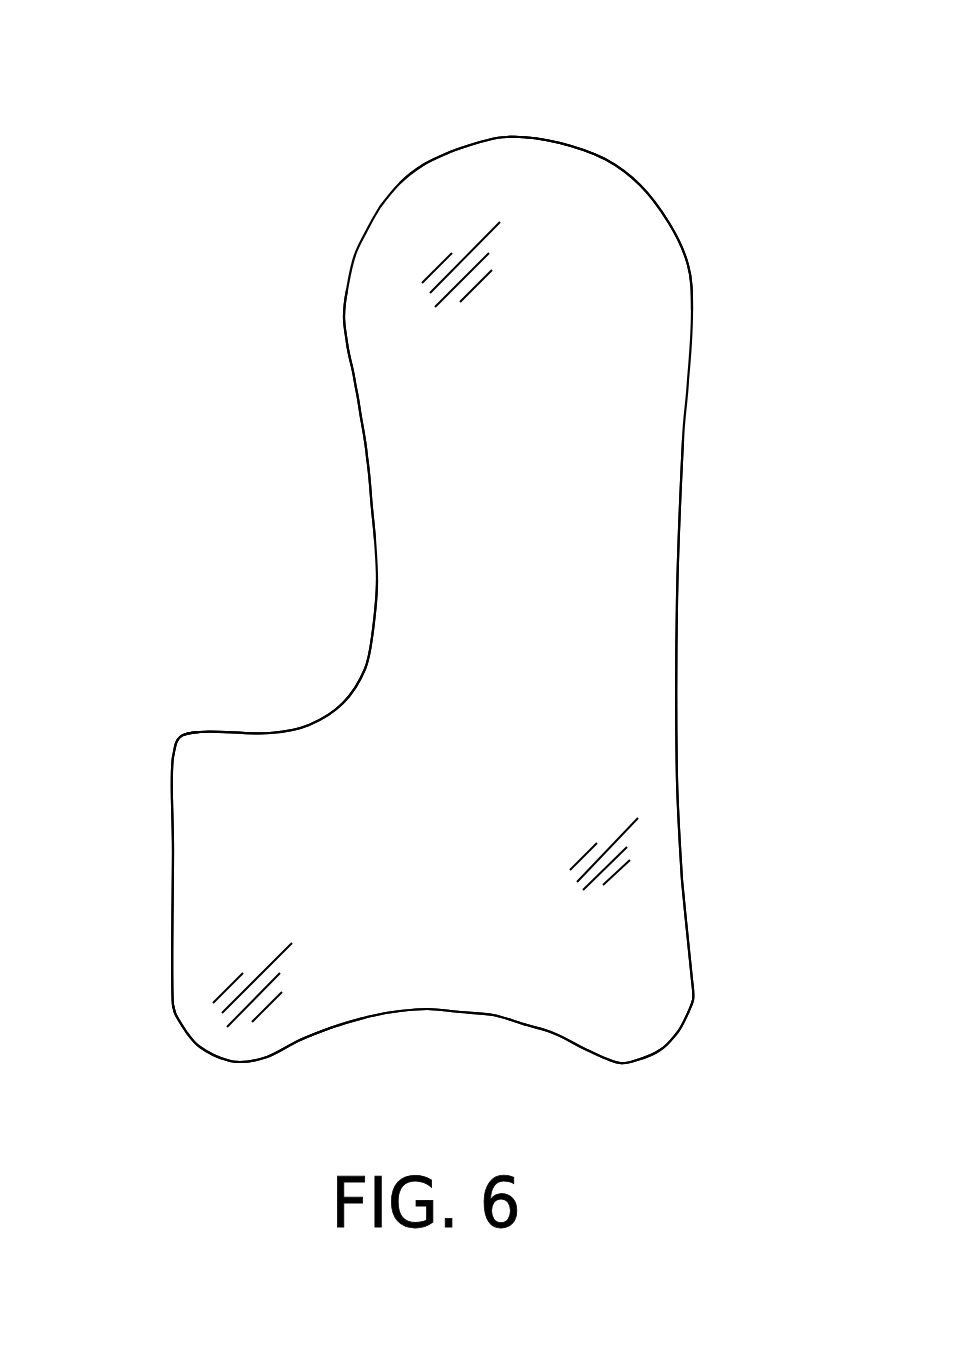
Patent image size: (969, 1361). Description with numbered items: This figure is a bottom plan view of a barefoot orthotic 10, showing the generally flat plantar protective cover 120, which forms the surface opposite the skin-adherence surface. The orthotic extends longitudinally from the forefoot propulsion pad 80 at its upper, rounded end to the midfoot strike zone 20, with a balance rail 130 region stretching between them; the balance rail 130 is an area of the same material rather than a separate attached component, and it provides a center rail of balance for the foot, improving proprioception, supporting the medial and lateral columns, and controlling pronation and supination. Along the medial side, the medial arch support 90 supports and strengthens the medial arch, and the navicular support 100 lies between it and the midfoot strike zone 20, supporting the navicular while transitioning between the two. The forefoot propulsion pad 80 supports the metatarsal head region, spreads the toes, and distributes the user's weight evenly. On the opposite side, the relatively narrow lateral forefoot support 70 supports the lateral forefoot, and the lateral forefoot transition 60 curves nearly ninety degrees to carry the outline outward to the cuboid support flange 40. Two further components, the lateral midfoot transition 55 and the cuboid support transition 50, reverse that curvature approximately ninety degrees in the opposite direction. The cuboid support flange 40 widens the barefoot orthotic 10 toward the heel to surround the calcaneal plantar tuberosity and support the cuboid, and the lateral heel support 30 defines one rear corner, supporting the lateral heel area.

The barefoot orthotic 10 is at (176, 114).
The midfoot strike zone 20 is at (448, 136).
The lateral heel support 30 is at (168, 1074).
The cuboid support flange 40 is at (154, 904).
The cuboid support transition 50 is at (146, 726).
The lateral midfoot transition 55 is at (247, 715).
The lateral forefoot transition 60 is at (307, 647).
The lateral forefoot support 70 is at (284, 447).
The forefoot propulsion pad 80 is at (564, 116).
The medial arch support 90 is at (704, 647).
The navicular support 100 is at (684, 1093).
The plantar protective cover 120 is at (437, 949).
The balance rail 130 is at (464, 881).